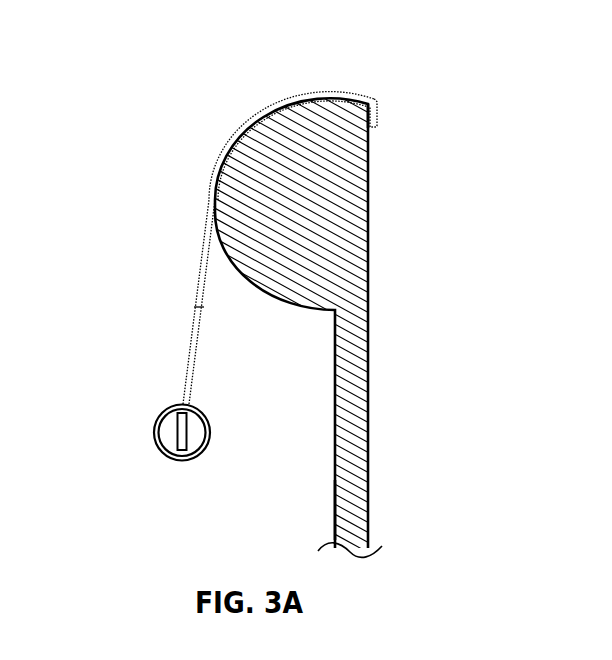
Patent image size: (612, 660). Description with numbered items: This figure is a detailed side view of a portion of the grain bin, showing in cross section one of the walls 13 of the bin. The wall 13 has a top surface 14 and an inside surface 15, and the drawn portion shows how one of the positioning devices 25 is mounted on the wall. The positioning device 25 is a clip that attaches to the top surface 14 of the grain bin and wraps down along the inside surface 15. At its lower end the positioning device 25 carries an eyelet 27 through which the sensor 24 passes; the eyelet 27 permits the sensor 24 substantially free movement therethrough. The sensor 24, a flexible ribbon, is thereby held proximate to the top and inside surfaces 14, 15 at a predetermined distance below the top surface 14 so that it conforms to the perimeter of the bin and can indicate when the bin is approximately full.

The walls 13 is at (368, 406).
The top surface 14 is at (359, 101).
The inside surface 15 is at (325, 507).
The sensor 24 is at (176, 433).
The positioning devices 25 is at (236, 124).
The eyelet 27 is at (173, 460).